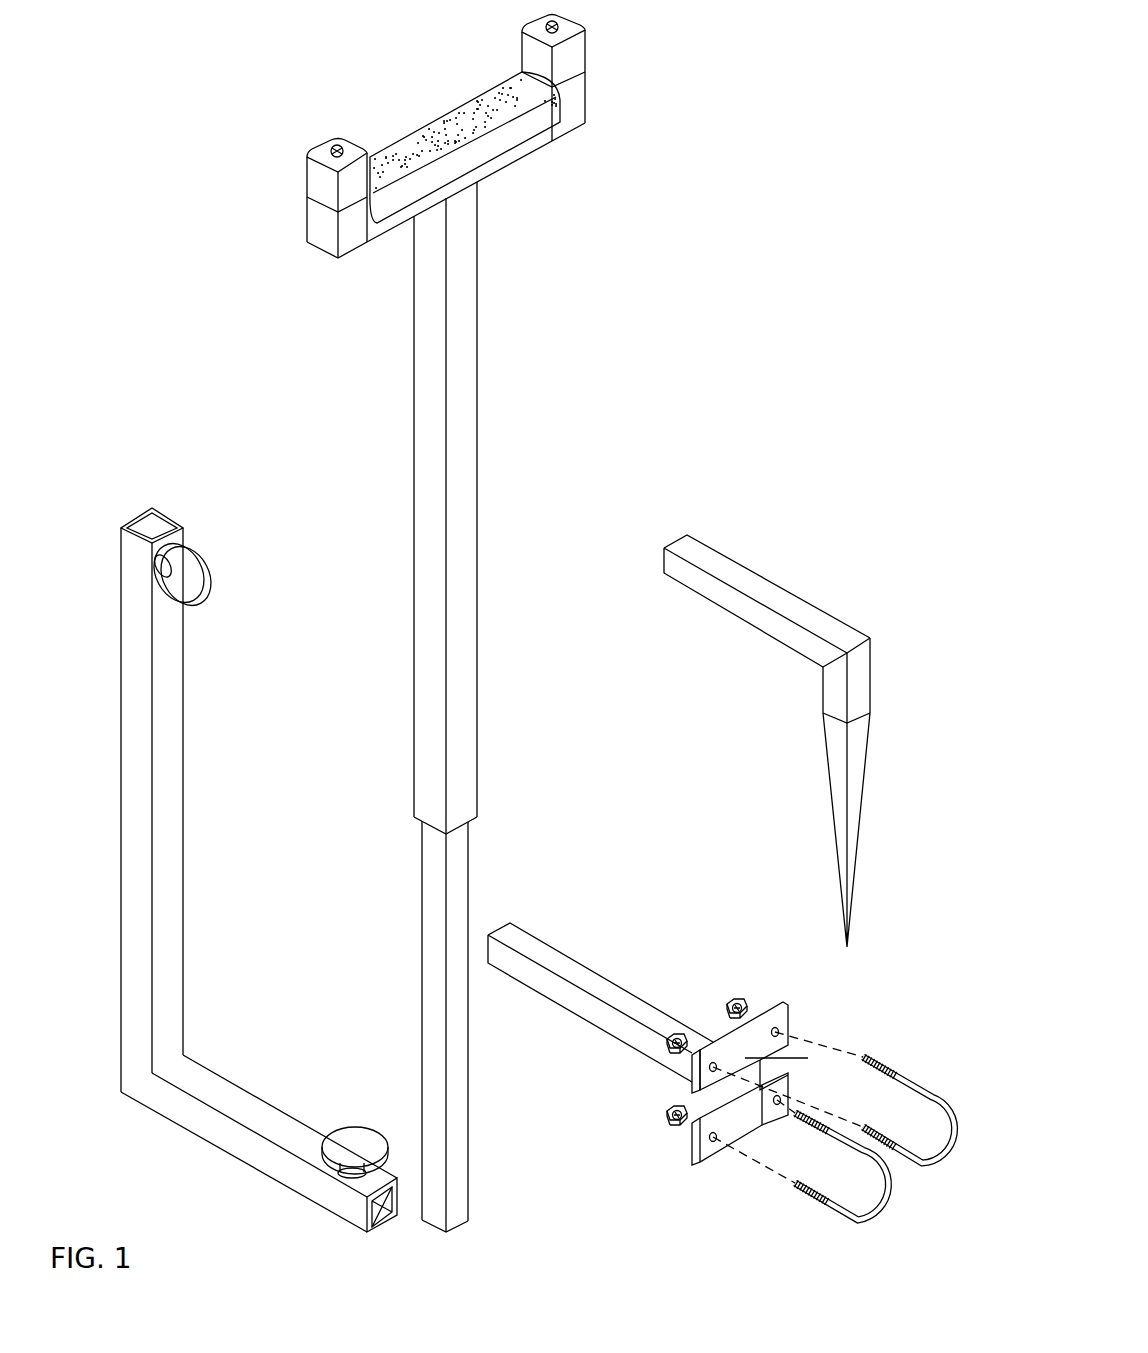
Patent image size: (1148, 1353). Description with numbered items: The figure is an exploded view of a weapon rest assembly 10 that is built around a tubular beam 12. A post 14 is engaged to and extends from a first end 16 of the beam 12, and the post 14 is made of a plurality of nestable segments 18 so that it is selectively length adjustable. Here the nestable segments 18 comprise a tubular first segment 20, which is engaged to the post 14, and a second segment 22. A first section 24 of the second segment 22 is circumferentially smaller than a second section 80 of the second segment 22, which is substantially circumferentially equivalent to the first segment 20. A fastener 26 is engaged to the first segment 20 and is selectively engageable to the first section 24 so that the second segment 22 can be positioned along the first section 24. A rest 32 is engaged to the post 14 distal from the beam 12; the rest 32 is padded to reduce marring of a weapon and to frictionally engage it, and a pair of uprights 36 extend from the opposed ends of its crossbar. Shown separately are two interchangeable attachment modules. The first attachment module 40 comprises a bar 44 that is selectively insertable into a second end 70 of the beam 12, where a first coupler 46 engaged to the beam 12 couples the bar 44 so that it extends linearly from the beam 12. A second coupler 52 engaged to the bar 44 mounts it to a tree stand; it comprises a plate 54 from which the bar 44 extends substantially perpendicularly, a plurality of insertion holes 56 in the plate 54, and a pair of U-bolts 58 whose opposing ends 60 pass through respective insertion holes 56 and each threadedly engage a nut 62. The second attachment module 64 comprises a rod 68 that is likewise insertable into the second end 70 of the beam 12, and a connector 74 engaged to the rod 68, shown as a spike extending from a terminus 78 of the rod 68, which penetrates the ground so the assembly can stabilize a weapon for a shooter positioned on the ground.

The weapon rest assembly 10 is at (805, 137).
The beam 12 is at (233, 1157).
The post 14 is at (183, 765).
The first end 16 is at (138, 1108).
The nestable segments 18 is at (180, 657).
The first segment 20 is at (121, 635).
The second segment 22 is at (413, 300).
The first section 24 is at (430, 1040).
The fastener 26 is at (206, 572).
The rest 32 is at (517, 130).
The uprights 36 is at (318, 148).
The first attachment module 40 is at (773, 1077).
The bar 44 is at (577, 1015).
The first coupler 46 is at (363, 1145).
The second coupler 52 is at (834, 1104).
The plate 54 is at (693, 1140).
The insertion holes 56 is at (716, 1072).
The U-bolts 58 is at (887, 1200).
The opposing ends 60 is at (782, 1178).
The nut 62 is at (668, 1117).
The second attachment module 64 is at (792, 683).
The rod 68 is at (722, 548).
The second end 70 is at (383, 1200).
The connector 74 is at (867, 767).
The terminus 78 is at (853, 640).
The second section 80 is at (304, 637).